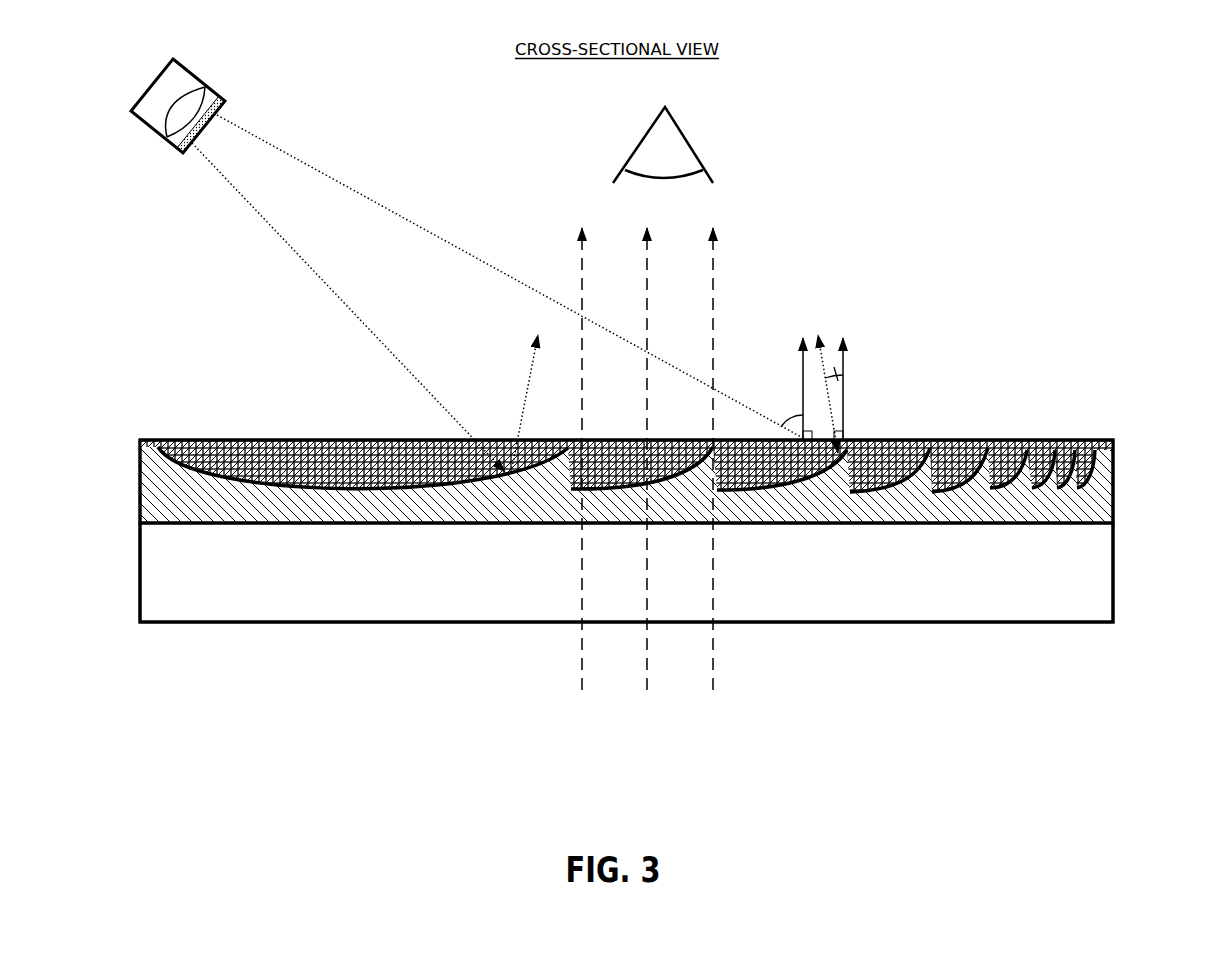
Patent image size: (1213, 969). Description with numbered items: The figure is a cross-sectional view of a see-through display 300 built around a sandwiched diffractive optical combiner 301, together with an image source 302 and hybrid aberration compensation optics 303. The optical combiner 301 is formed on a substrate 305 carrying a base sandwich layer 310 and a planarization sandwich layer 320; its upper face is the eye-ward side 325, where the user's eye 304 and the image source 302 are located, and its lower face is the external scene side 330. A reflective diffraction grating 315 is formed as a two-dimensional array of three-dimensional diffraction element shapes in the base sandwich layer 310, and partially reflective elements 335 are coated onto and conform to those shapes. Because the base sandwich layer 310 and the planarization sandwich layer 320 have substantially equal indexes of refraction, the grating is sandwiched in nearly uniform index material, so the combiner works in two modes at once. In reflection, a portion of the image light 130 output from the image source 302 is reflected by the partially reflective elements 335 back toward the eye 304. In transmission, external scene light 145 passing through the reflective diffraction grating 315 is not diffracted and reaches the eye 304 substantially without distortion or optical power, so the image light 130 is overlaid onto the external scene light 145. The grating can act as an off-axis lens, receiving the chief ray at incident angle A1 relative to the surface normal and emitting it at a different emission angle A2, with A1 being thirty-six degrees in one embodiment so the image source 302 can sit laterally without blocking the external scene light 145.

The see-through display 300 is at (995, 80).
The sandwiched diffractive optical combiner 301 is at (668, 494).
The image source 302 is at (157, 106).
The hybrid aberration compensation optics 303 is at (236, 100).
The eye 304 is at (650, 161).
The substrate 305 is at (300, 606).
The base sandwich layer 310 is at (179, 508).
The reflective diffraction grating 315 is at (233, 345).
The planarization sandwich layer 320 is at (365, 474).
The eye-ward side 325 is at (837, 227).
The external scene side 330 is at (832, 695).
The partially reflective elements 335 is at (310, 490).
The image light 130 is at (277, 204).
The external scene light 145 is at (582, 697).
The incident angle A1 is at (797, 415).
The emission angle A2 is at (828, 378).